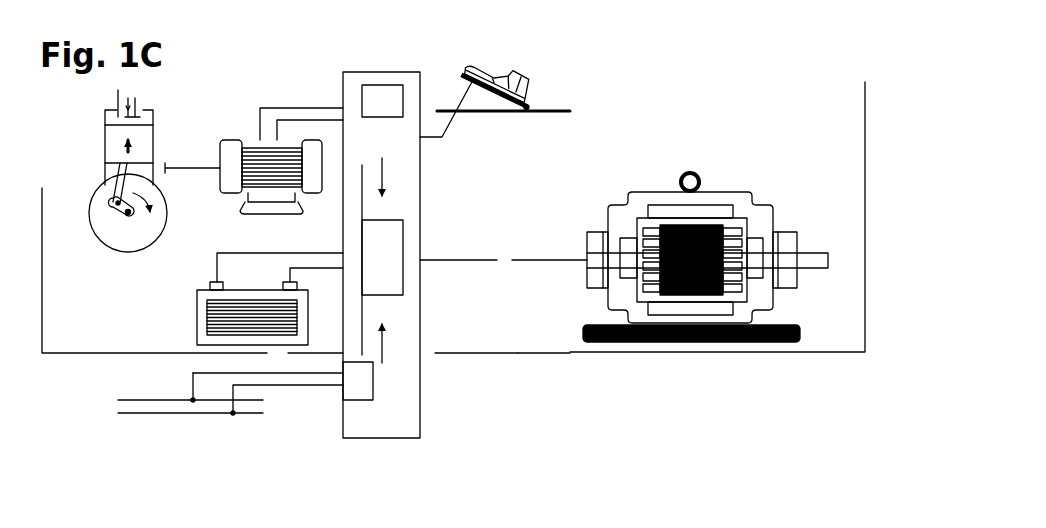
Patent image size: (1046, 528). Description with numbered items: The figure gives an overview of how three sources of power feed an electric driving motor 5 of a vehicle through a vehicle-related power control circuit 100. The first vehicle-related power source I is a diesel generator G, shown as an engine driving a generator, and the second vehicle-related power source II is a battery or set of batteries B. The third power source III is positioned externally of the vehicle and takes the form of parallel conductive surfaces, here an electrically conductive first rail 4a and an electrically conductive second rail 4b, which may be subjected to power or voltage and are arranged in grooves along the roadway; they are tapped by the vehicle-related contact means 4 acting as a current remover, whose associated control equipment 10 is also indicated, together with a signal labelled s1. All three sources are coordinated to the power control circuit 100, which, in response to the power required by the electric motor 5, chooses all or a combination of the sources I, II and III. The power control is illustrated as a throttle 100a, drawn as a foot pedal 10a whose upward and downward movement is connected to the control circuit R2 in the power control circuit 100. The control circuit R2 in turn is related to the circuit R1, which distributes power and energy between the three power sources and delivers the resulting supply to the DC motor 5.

The power control circuit 100 is at (410, 427).
The throttle 100a is at (507, 21).
The control equipment for contact means 10 is at (362, 380).
The accelerator pedal 10a is at (432, 138).
The control circuit for energy distribution R2 is at (372, 93).
The energy distributing and power sources controlling circuit R1 is at (387, 273).
The first vehicle related power source I is at (163, 137).
The second vehicle related power source II is at (128, 230).
The diesel generator G is at (250, 212).
The battery set B is at (202, 328).
The third power source III is at (156, 406).
The switch signal s1 is at (142, 421).
The electrical conductive first rail 4a is at (144, 380).
The vehicle related contact means 4 is at (237, 372).
The electrical conductive second rail 4b is at (250, 386).
The DC-motor 5 is at (720, 192).